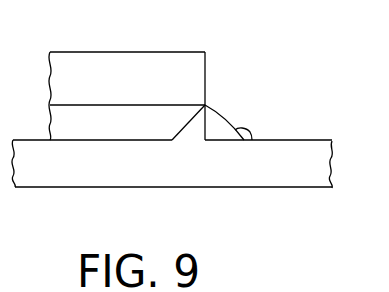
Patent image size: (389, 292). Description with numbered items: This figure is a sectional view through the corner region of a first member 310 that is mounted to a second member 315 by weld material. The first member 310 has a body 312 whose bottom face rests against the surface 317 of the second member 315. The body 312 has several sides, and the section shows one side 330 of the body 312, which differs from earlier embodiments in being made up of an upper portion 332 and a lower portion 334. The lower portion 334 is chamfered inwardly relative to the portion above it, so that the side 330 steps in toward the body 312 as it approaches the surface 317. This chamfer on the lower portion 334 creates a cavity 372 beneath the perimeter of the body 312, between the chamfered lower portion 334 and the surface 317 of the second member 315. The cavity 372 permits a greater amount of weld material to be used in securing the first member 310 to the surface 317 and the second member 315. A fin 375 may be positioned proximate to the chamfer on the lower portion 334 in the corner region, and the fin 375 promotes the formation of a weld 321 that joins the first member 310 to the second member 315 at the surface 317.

The first member 310 is at (72, 52).
The body 312 is at (166, 35).
The side 330 is at (206, 60).
The upper portion 332 is at (206, 82).
The fin 375 is at (207, 118).
The surface 317 is at (317, 140).
The lower portion 334 is at (186, 140).
The second member 315 is at (300, 180).
The cavity 372 is at (192, 129).
The weld 321 is at (251, 142).